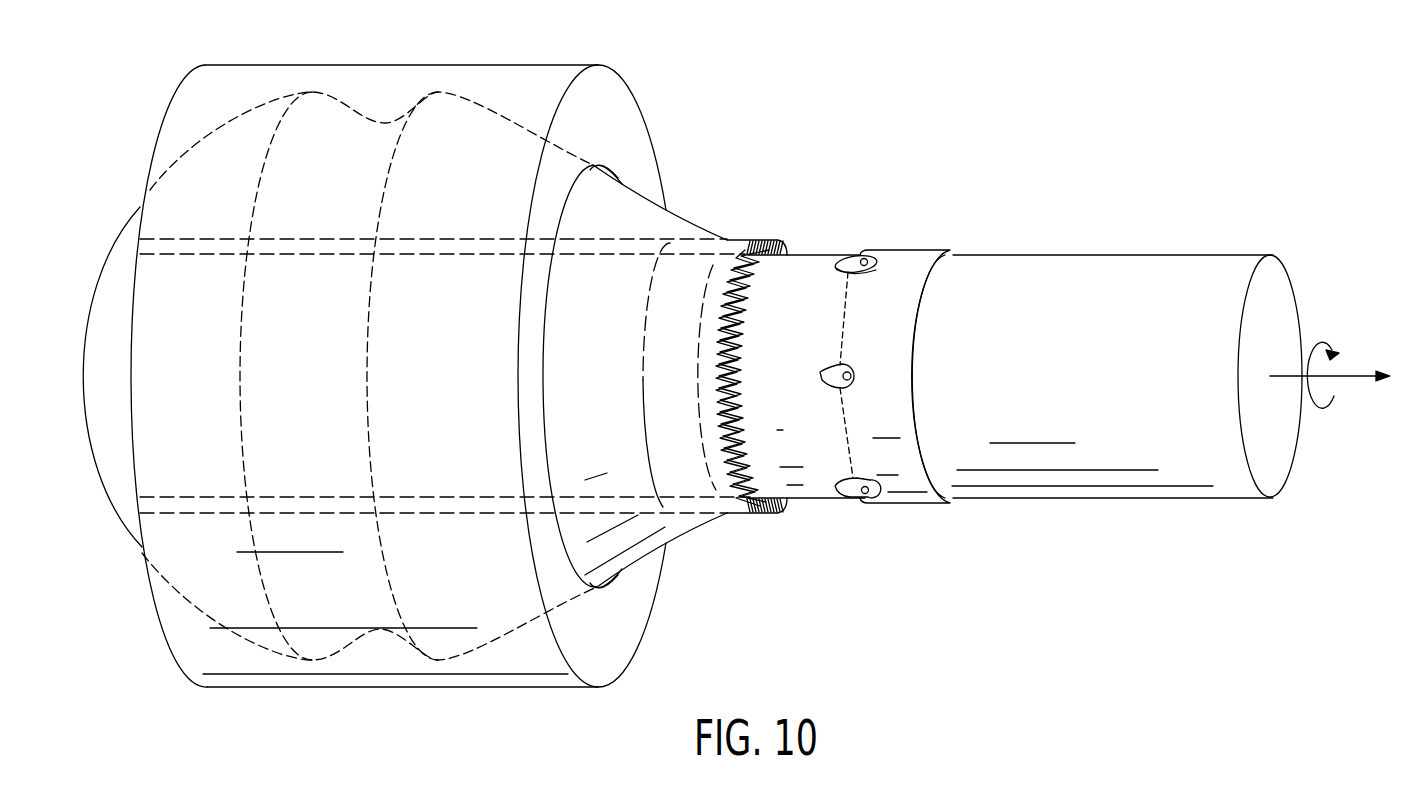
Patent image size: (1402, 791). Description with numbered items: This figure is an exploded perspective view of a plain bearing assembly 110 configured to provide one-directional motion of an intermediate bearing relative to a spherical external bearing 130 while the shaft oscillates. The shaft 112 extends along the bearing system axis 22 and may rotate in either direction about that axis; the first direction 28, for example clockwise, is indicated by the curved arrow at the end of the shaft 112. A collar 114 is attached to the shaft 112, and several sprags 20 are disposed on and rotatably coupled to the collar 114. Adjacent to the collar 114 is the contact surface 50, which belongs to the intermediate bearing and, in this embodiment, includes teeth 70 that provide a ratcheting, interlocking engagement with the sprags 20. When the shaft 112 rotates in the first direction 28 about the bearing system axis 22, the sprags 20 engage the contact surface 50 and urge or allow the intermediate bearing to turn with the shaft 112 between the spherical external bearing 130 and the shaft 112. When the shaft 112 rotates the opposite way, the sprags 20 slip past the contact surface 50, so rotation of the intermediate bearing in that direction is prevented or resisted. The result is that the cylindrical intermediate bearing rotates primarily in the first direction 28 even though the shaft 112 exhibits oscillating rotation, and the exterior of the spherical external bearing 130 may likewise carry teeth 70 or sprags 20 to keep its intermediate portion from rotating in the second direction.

The spherical external bearing 130 is at (680, 128).
The plain bearing assembly 110 is at (1039, 324).
The shaft 112 is at (1108, 255).
The collar 114 is at (905, 250).
The teeth 70 is at (740, 257).
The contact surface 50 is at (767, 521).
The sprags 20 is at (848, 266).
The bearing system axis 22 is at (1365, 377).
The first direction 28 is at (1324, 407).